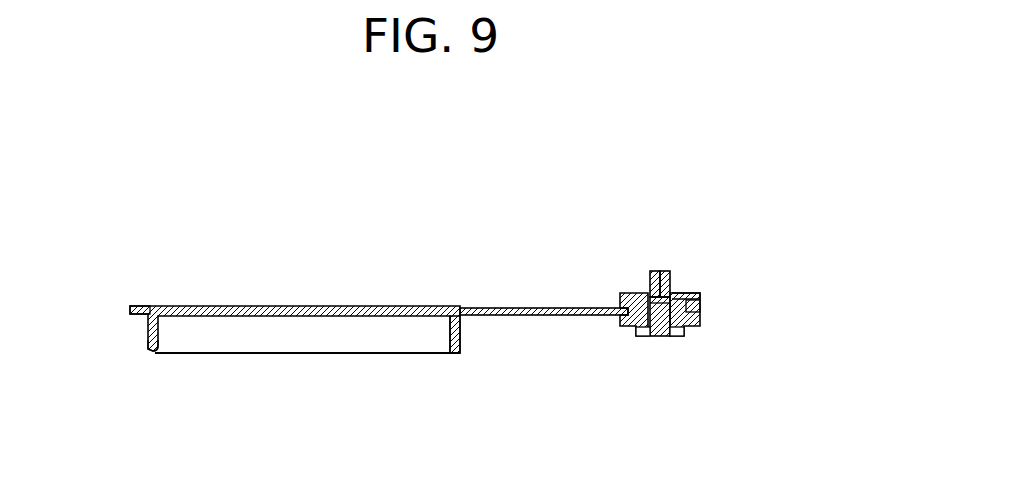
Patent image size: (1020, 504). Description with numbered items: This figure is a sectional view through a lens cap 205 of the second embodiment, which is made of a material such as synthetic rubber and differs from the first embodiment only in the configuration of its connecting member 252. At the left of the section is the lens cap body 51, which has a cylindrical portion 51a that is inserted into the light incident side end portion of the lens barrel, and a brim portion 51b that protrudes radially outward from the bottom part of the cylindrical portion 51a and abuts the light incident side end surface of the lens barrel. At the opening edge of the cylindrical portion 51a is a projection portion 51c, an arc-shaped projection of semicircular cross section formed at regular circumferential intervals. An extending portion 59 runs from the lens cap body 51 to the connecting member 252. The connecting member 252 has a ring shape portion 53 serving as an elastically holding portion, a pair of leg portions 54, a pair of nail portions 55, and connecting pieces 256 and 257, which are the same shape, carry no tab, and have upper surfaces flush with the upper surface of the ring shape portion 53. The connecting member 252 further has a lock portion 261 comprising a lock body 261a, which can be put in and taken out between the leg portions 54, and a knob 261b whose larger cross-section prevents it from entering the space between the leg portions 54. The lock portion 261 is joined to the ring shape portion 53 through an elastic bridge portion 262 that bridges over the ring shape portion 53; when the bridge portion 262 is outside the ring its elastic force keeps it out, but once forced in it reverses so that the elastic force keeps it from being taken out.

The lens cap body 51 is at (287, 305).
The cylindrical portion 51a is at (462, 333).
The brim portion 51b is at (133, 306).
The projection portion 51c is at (150, 345).
The lens cap 205 is at (448, 285).
The extending portion 59 is at (512, 308).
The lock portion 261 is at (640, 221).
The lock body 261a is at (640, 290).
The knob 261b is at (681, 290).
The bridge portion 262 is at (637, 227).
The connecting piece 256 is at (645, 300).
The connecting member 252 is at (671, 250).
The connecting piece 257 is at (690, 291).
The ring shape portion 53 is at (698, 302).
The leg portion 54 is at (622, 325).
The nail portion 55 is at (642, 337).